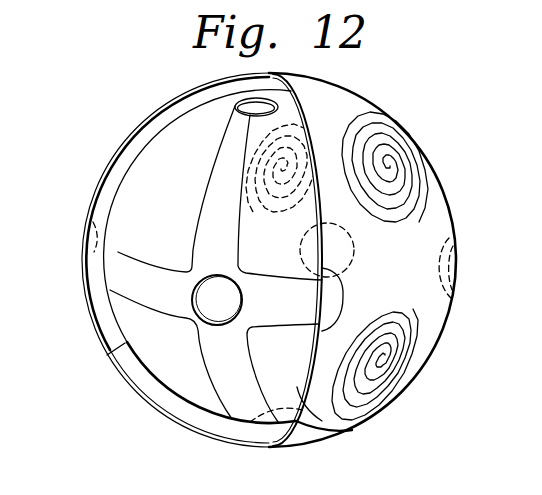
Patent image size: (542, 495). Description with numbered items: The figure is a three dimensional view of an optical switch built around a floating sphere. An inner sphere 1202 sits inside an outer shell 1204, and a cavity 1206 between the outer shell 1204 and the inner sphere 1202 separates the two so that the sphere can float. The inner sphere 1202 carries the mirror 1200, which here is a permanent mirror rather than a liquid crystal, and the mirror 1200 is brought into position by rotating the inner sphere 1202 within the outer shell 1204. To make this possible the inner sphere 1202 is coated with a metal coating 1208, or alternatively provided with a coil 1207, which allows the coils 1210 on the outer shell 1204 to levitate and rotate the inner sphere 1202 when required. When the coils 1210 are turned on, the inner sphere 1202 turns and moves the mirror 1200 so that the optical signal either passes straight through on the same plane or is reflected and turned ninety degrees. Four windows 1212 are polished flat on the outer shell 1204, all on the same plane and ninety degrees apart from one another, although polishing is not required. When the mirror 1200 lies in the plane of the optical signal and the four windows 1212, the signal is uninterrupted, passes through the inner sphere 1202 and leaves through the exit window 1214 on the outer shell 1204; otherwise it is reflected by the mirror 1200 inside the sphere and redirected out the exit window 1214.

The mirror 1200 is at (232, 366).
The inner sphere 1202 is at (110, 352).
The outer shell 1204 is at (158, 110).
The cavity 1206 is at (112, 187).
The coil 1207 is at (245, 181).
The metal coating 1208 is at (336, 433).
The coils 1210 is at (430, 197).
The windows 1212 is at (213, 300).
The exit window 1214 is at (247, 259).